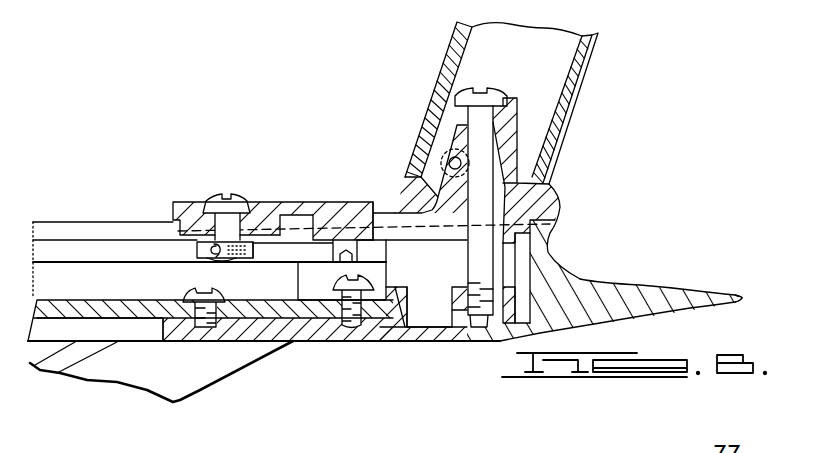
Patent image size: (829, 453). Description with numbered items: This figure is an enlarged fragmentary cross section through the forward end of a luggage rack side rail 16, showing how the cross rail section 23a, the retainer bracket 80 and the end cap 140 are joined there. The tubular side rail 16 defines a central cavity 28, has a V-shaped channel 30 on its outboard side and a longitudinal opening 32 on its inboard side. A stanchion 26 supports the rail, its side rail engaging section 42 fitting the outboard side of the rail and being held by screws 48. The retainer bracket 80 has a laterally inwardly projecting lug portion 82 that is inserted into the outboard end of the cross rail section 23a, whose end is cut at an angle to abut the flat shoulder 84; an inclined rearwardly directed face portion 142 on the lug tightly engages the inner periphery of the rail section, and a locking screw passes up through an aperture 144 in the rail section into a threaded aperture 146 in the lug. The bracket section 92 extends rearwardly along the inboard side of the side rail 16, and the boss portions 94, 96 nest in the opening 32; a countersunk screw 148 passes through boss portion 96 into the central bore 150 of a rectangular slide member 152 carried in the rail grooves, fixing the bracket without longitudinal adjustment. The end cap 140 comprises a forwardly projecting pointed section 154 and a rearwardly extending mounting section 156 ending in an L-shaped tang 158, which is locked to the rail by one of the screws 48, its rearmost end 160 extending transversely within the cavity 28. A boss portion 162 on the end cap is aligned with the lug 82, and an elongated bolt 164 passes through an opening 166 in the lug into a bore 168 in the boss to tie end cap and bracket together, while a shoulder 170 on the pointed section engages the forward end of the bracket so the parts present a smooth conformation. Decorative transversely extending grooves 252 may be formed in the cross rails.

The side rail 16 is at (40, 348).
The stanchion 26 is at (203, 387).
The central cavity 28 is at (43, 272).
The V-shaped channel 30 is at (55, 323).
The longitudinal opening 32 is at (83, 228).
The side rail engaging section 42 is at (308, 336).
The screw 48 is at (180, 288).
The retainer bracket 80 is at (329, 192).
The lug portion 82 is at (560, 115).
The flat shoulder 84 is at (408, 160).
The section of bracket 92 is at (263, 206).
The boss portion 94 is at (366, 237).
The boss portion 96 is at (290, 230).
The end cap 140 is at (623, 278).
The inclined face portion 142 is at (444, 150).
The aperture 144 is at (412, 142).
The aperture 146 is at (449, 157).
The countersunk screw 148 is at (207, 194).
The central bore 150 is at (190, 273).
The slide member 152 is at (272, 247).
The pointed section 154 is at (690, 290).
The mounting section 156 is at (430, 334).
The L-shaped tang 158 is at (381, 284).
The rearmost end of tang 160 is at (287, 245).
The boss portion 162 is at (452, 300).
The elongated bolt 164 is at (500, 262).
The opening 166 is at (498, 100).
The bore 168 is at (500, 291).
The shoulder 170 is at (563, 193).
The transversely extending groove 252 is at (598, 52).
The cross rail section 23a is at (556, 132).